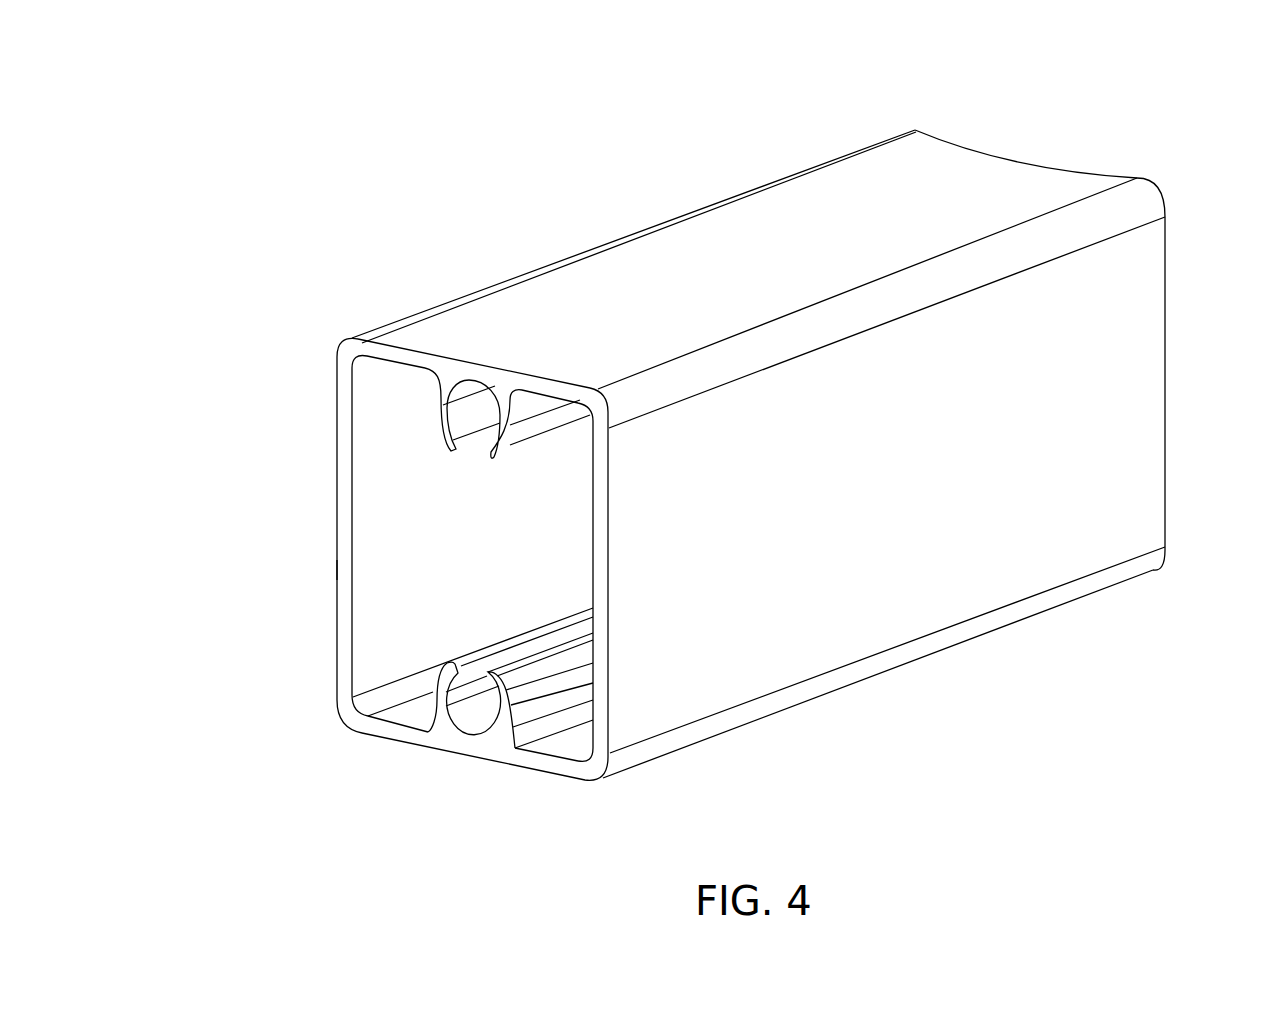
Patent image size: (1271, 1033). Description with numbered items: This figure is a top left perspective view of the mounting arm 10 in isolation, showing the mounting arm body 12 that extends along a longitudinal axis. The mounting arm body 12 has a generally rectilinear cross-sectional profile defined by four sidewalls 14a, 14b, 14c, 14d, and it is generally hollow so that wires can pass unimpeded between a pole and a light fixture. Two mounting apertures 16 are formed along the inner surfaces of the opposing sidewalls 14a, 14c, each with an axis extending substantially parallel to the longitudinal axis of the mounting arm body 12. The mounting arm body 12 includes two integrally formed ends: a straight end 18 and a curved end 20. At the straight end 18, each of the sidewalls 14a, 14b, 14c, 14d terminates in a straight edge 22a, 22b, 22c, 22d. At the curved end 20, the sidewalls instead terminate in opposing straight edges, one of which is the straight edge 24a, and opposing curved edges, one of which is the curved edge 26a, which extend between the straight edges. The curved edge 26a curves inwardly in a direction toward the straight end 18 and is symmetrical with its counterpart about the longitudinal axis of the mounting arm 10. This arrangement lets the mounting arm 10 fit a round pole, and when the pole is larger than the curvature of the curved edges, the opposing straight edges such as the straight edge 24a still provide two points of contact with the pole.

The mounting arm 10 is at (541, 198).
The mounting arm body 12 is at (1005, 575).
The sidewall 14a is at (710, 278).
The sidewall 14b is at (915, 480).
The sidewall 14c is at (560, 772).
The sidewall 14d is at (421, 568).
The mounting aperture 16 is at (476, 435).
The straight end 18 is at (456, 789).
The curved end 20 is at (972, 102).
The straight edge 22a is at (470, 372).
The straight edge 22b is at (597, 640).
The straight edge 22c is at (363, 733).
The straight edge 22d is at (337, 570).
The straight edge 24a is at (1166, 455).
The curved edge 26a is at (1005, 160).